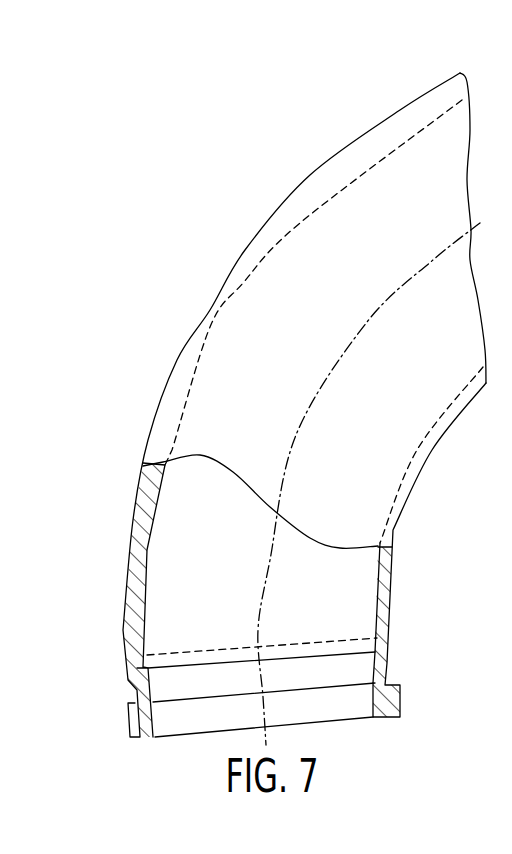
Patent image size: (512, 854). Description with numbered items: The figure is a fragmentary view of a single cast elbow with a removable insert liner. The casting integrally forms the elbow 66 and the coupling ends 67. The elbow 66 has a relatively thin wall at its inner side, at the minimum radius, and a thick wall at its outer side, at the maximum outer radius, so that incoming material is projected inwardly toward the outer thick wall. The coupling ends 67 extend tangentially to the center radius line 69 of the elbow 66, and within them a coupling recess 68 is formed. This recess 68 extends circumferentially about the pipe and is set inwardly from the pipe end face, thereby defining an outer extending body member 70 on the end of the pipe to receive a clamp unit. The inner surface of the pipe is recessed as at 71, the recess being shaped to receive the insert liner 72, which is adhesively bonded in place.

The elbow 66 is at (383, 573).
The coupling ends 67 is at (395, 658).
The coupling recess 68 is at (388, 673).
The center radius line 69 is at (258, 620).
The outer extending body member 70 is at (398, 693).
The recessed inner surface 71 is at (350, 723).
The insert liner 72 is at (150, 688).